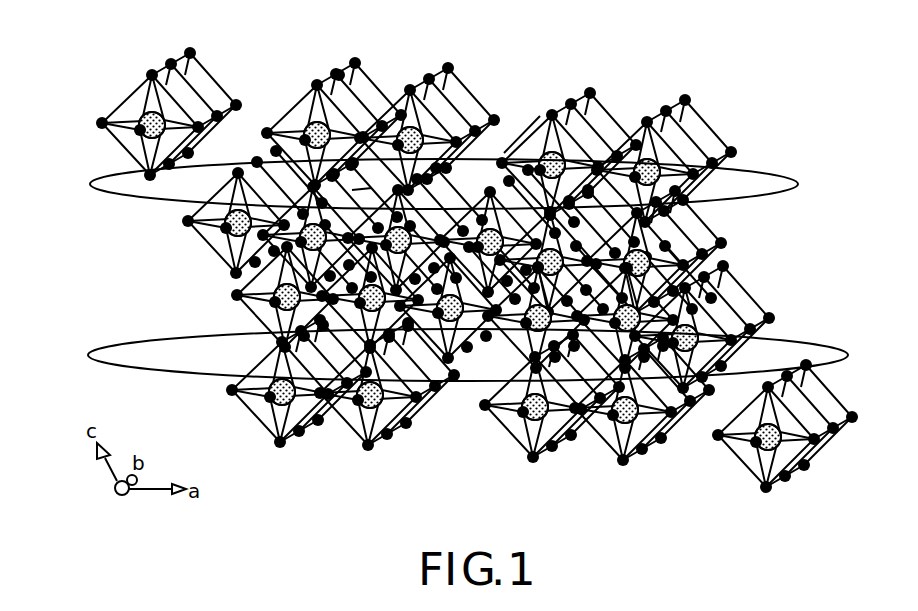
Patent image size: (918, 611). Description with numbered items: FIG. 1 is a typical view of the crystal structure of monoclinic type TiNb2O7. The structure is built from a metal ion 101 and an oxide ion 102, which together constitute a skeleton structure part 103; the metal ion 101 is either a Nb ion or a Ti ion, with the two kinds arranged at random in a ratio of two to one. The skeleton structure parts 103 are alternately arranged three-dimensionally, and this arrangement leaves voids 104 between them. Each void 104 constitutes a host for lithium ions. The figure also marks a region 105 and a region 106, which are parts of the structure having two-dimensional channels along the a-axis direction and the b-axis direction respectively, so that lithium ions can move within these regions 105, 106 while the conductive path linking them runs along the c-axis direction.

The metal ion 101 is at (440, 128).
The oxide ion 102 is at (341, 74).
The skeleton structure part 103 is at (522, 125).
The void 104 is at (360, 185).
The region 105 is at (776, 174).
The region 106 is at (809, 343).